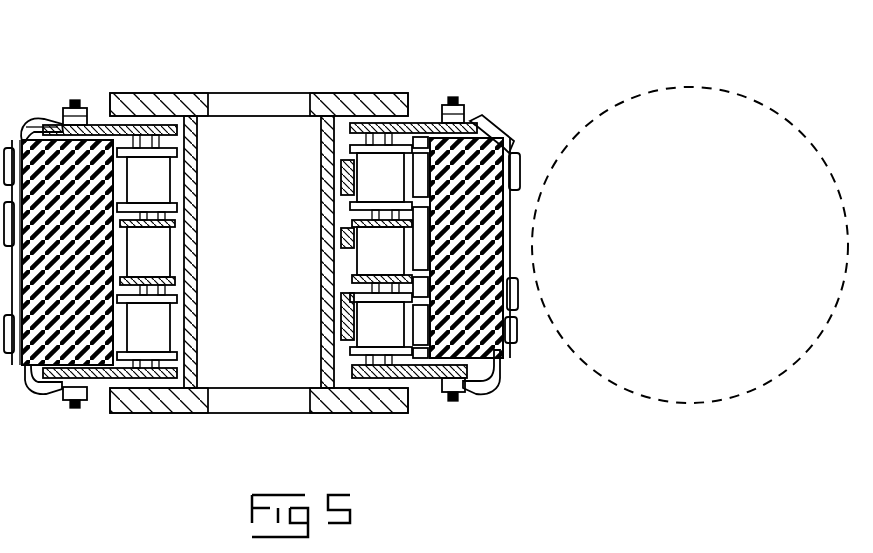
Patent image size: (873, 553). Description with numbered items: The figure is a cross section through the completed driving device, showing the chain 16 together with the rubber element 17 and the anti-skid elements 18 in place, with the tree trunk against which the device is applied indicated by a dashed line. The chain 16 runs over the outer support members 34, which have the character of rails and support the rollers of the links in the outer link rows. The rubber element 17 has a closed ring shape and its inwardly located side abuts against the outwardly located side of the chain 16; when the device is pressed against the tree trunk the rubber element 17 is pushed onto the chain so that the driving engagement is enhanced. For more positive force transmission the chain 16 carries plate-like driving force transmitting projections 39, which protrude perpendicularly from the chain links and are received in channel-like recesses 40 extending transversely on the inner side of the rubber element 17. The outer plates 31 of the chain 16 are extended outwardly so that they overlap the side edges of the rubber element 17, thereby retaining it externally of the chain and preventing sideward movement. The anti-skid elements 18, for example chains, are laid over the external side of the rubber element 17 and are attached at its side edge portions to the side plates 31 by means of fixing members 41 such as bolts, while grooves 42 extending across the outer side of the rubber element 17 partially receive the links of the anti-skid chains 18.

The chain 16 is at (343, 206).
The rubber element 17 is at (503, 223).
The anti-skid elements 18 is at (516, 152).
The outer plates 31 is at (420, 123).
The outer support members 34 is at (341, 178).
The driving force transmitting projections 39 is at (420, 249).
The recesses 40 is at (405, 317).
The fixing members 41 is at (466, 106).
The grooves 42 is at (509, 276).